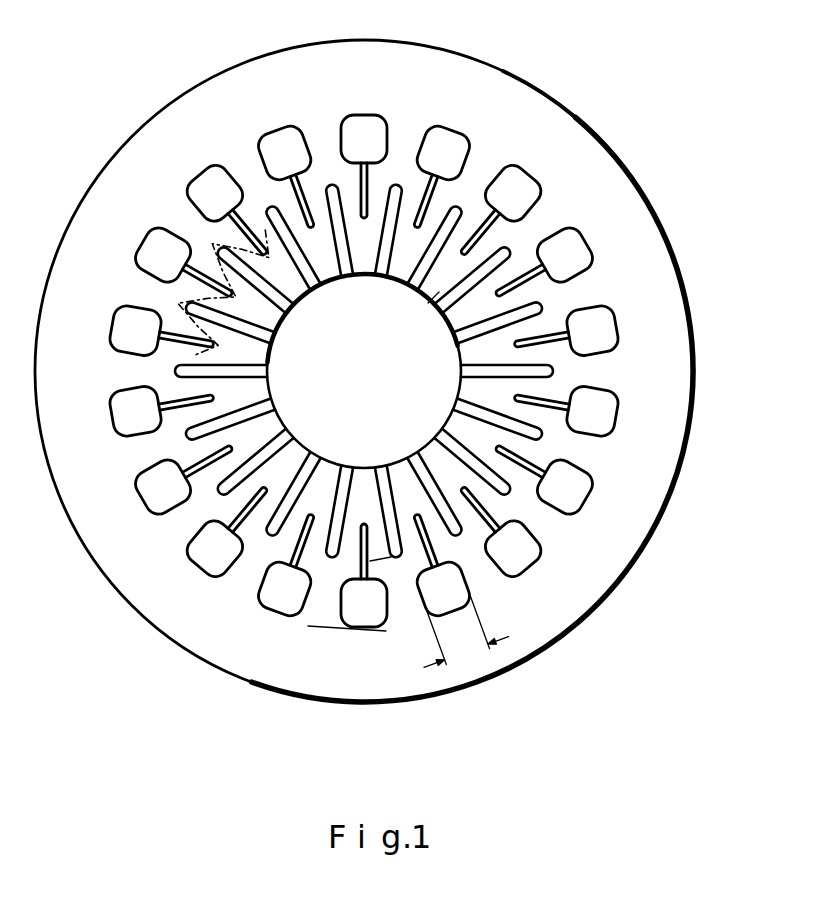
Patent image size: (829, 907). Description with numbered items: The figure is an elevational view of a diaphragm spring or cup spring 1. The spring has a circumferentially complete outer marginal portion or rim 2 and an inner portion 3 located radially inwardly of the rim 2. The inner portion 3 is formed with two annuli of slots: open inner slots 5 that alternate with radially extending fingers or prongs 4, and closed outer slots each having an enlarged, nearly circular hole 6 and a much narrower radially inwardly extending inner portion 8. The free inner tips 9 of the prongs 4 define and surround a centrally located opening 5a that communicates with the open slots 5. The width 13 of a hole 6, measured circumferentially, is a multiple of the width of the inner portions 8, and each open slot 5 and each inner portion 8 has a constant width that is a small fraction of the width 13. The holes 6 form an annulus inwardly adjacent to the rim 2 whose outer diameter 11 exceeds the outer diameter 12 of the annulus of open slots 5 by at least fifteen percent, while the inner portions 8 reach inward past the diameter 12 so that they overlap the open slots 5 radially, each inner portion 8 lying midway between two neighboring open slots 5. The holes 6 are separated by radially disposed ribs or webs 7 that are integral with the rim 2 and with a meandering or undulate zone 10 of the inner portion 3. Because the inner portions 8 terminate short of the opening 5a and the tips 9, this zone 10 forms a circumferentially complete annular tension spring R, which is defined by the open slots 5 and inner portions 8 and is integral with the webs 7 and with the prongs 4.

The diaphragm spring 1 is at (218, 72).
The rim 2 is at (374, 62).
The inner portion 3 is at (383, 187).
The prongs 4 is at (453, 484).
The open inner slots 5 is at (455, 409).
The central opening 5a is at (365, 422).
The hole 6 is at (563, 240).
The webs 7 is at (577, 457).
The inner portion of closed slot 8 is at (577, 330).
The tips 9 is at (466, 313).
The undulate zone 10 is at (268, 353).
The outer diameter of annulus of holes 11 is at (325, 623).
The outer diameter of annulus of open slots 12 is at (380, 552).
The width of hole 13 is at (459, 630).
The annular tension spring R is at (553, 373).